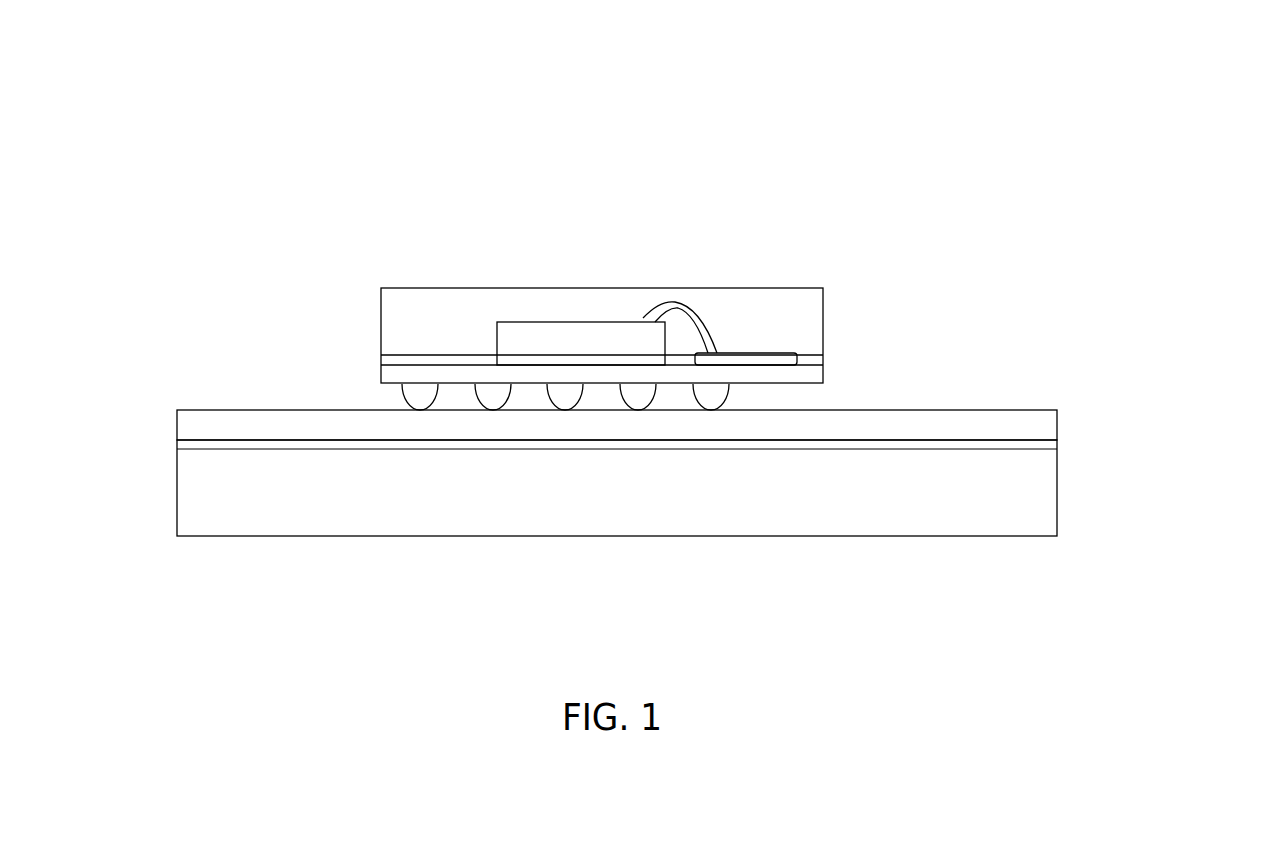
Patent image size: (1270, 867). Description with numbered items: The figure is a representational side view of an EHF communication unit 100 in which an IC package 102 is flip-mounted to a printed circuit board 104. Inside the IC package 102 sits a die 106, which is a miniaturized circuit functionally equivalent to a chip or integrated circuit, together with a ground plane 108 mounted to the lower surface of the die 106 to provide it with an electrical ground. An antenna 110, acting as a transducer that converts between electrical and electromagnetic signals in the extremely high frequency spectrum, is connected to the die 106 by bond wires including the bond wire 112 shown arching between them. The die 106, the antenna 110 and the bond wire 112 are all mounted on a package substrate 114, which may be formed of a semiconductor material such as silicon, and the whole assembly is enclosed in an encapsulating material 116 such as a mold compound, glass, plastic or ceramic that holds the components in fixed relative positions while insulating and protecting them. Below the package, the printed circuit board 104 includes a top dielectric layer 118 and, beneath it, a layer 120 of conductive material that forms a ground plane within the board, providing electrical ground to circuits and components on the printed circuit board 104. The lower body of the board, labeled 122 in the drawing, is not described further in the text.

The EHF communication unit 100 is at (188, 143).
The IC package 102 is at (380, 317).
The printed circuit board 104 is at (1058, 484).
The die 106 is at (580, 322).
The ground plane 108 is at (508, 363).
The antenna 110 is at (763, 352).
The bond wire 112 is at (693, 310).
The package substrate 114 is at (383, 373).
The encapsulating material 116 is at (507, 288).
The top dielectric layer 118 is at (969, 423).
The layer 120 is at (968, 449).
The core layer of printed circuit board 122 is at (760, 512).